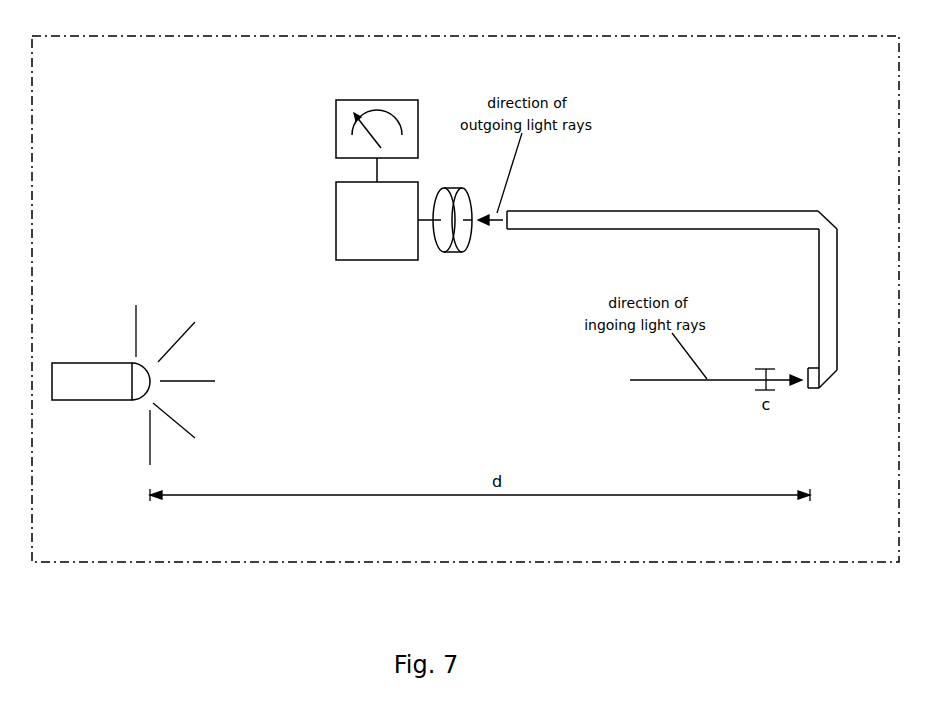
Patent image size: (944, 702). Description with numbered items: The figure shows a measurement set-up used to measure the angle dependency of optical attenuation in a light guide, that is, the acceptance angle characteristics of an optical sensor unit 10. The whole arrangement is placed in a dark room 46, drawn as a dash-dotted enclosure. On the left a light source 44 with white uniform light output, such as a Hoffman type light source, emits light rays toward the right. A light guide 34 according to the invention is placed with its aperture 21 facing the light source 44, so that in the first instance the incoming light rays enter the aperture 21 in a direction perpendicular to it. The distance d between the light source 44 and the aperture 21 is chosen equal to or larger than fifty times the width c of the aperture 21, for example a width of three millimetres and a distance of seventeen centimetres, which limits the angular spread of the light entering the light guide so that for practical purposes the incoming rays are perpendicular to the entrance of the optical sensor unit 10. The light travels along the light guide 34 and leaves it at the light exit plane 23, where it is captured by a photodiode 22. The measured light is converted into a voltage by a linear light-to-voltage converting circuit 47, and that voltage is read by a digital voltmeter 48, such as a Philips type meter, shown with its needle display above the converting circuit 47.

The optical sensor unit 10 is at (672, 235).
The aperture 21 is at (808, 370).
The photodiode 22 is at (460, 238).
The light exit plane 23 is at (507, 213).
The light guide 34 is at (695, 211).
The light source 44 is at (113, 362).
The dark room 46 is at (148, 37).
The light-to-voltage converting circuit 47 is at (336, 218).
The digital voltmeter 48 is at (336, 138).